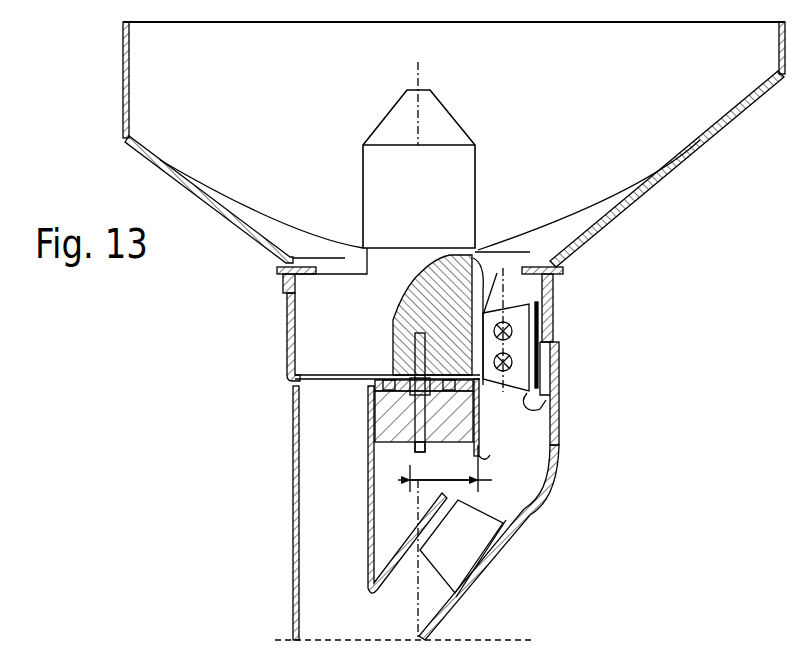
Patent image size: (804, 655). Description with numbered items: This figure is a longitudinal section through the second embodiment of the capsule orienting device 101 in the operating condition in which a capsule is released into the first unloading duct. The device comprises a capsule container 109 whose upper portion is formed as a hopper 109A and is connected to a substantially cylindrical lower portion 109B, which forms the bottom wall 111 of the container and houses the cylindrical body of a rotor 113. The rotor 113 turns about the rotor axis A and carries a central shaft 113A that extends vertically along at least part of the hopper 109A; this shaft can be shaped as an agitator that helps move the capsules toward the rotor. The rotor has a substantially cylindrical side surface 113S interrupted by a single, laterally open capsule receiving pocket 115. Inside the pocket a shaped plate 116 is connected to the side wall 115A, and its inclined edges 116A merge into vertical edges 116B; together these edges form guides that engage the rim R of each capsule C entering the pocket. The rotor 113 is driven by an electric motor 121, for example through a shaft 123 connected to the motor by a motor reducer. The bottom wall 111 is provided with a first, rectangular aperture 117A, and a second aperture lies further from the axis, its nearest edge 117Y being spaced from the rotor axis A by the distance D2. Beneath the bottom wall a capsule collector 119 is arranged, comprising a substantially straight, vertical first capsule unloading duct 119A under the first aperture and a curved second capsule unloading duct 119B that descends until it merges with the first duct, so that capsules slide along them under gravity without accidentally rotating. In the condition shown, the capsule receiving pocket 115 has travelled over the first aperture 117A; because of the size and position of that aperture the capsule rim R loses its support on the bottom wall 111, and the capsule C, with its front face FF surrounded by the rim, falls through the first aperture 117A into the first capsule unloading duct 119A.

The capsule orienting device 101 is at (288, 157).
The capsule container 109 is at (713, 117).
The hopper 109A is at (183, 179).
The lower portion of the container 109B is at (285, 342).
The bottom wall 111 is at (394, 386).
The rotor 113 is at (502, 200).
The central shaft 113A is at (372, 203).
The cylindrical side surface 113S is at (295, 328).
The capsule receiving pocket 115 is at (530, 286).
The side wall of the capsule receiving pocket 115A is at (456, 262).
The shaped plate 116 is at (514, 304).
The inclined edge 116A is at (486, 312).
The vertical edge 116B is at (553, 355).
The first aperture 117A is at (323, 389).
The edge of the second aperture 117Y is at (490, 383).
The capsule collector 119 is at (579, 477).
The first capsule unloading duct 119A is at (297, 529).
The second capsule unloading duct 119B is at (537, 510).
The electric motor 121 is at (390, 589).
The shaft 123 is at (417, 430).
The rotor axis A is at (405, 337).
The capsule C is at (461, 546).
The distance of the second aperture from the rotor axis D2 is at (445, 468).
The front face FF is at (541, 325).
The rim R is at (546, 409).